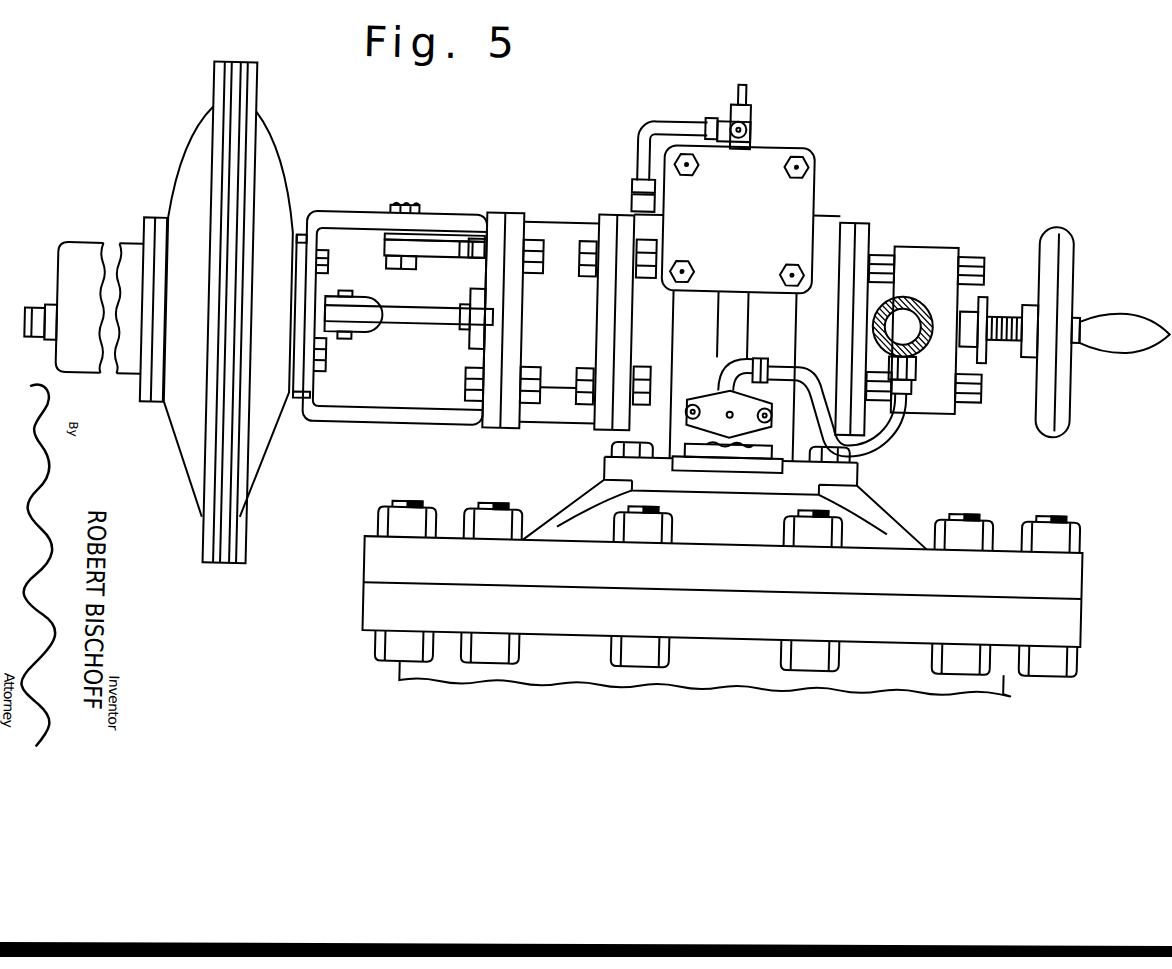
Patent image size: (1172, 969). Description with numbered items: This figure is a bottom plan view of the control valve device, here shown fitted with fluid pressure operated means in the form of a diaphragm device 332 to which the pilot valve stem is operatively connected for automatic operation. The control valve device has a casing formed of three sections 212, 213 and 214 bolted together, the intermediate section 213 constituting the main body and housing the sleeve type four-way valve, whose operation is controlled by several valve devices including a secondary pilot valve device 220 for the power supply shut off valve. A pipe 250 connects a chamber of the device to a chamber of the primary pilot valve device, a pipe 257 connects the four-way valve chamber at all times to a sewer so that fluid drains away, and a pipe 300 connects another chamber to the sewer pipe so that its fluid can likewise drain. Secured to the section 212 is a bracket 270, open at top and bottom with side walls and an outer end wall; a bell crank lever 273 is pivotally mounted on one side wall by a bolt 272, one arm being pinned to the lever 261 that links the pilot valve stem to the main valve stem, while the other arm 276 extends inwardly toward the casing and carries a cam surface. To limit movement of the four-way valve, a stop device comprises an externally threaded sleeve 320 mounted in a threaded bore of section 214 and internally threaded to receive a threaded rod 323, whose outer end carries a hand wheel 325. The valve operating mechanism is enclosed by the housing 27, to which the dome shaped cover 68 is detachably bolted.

The housing 27 is at (722, 599).
The cover 68 is at (726, 493).
The casing section 212 is at (540, 321).
The intermediate section 213 is at (717, 337).
The casing section 214 is at (910, 330).
The secondary pilot valve device 220 is at (710, 403).
The pipe 250 is at (659, 133).
The pipe 257 is at (926, 342).
The lever 261 is at (353, 333).
The bracket 270 is at (388, 420).
The bolt 272 is at (398, 212).
The bell crank lever 273 is at (383, 252).
The arm 276 is at (440, 256).
The pipe 300 is at (812, 354).
The sleeve 320 is at (985, 291).
The threaded rod 323 is at (1004, 340).
The hand wheel 325 is at (1059, 272).
The diaphragm device 332 is at (230, 312).